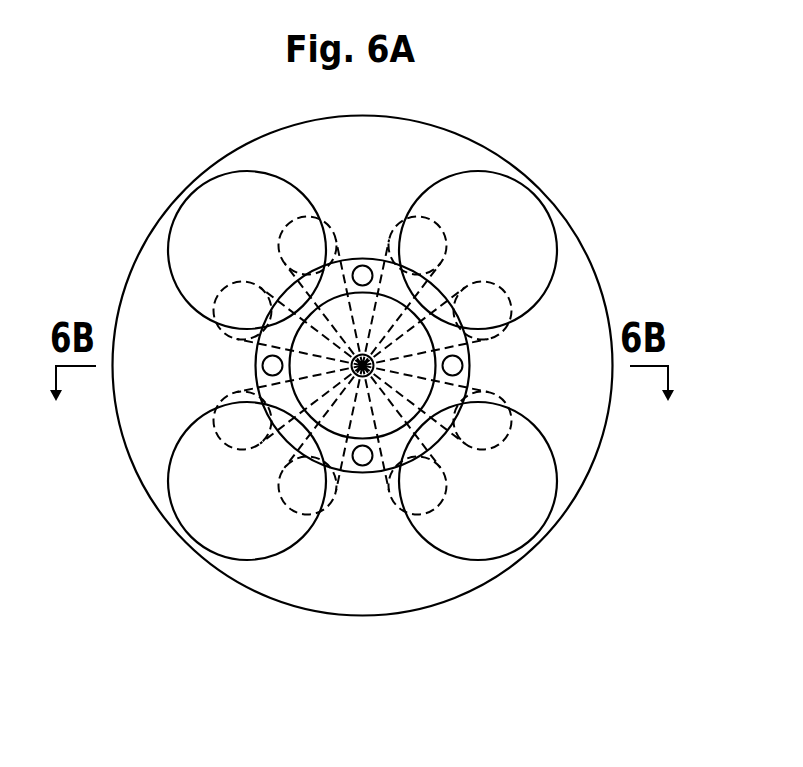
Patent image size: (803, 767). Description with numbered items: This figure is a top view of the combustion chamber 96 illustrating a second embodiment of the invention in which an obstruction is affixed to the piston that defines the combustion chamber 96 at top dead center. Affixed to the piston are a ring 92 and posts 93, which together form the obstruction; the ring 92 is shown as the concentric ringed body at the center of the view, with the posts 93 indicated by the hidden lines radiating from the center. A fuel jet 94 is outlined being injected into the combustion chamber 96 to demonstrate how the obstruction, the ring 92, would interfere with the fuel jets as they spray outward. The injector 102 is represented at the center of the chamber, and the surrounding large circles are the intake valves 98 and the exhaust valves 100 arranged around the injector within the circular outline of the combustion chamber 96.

The ring 92 is at (412, 295).
The posts 93 is at (263, 320).
The fuel jet 94 is at (527, 333).
The combustion chamber 96 is at (160, 382).
The intake valves 98 is at (488, 195).
The exhaust valves 100 is at (213, 207).
The injector 102 is at (365, 368).